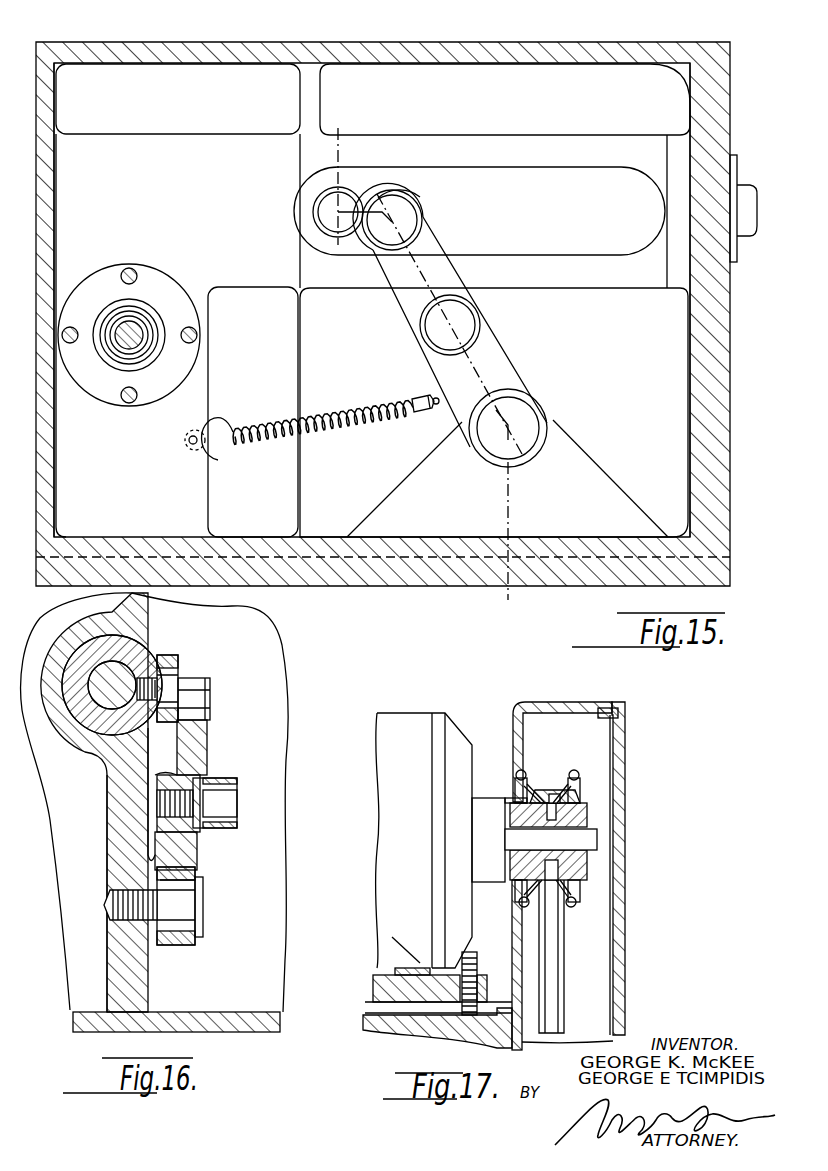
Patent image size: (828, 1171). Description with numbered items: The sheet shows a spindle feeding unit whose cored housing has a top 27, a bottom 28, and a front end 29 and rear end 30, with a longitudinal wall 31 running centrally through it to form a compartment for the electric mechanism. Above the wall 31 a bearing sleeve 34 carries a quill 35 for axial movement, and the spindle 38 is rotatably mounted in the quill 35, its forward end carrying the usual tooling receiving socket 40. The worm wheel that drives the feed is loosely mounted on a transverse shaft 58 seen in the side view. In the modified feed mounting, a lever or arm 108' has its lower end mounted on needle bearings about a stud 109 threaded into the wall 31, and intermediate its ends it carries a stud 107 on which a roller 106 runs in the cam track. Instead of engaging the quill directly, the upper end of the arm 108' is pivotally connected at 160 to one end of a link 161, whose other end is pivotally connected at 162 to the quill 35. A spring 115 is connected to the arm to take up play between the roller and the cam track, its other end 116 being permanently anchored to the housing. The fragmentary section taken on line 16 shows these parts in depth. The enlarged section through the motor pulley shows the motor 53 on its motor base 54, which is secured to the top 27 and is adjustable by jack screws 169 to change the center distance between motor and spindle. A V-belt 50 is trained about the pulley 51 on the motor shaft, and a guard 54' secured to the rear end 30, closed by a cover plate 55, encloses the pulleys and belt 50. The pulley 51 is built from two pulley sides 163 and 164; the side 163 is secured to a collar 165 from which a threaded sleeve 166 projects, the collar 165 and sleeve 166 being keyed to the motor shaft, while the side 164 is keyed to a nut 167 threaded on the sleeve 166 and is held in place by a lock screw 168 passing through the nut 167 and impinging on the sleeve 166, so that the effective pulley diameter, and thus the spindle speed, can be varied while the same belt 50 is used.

In FIG. 15, the section line 16— 16 is at (427, 364).
In FIG. 15, the top 27 is at (505, 55).
In FIG. 17, the top 27 is at (368, 1034).
In FIG. 15, the bottom 28 is at (430, 548).
In FIG. 16, the bottom 28 is at (225, 996).
In FIG. 15, the front end 29 is at (720, 304).
In FIG. 15, the rear end 30 is at (44, 180).
In FIG. 16, the wall 31 is at (110, 798).
In FIG. 15, the bearing sleeve 34 is at (538, 147).
In FIG. 16, the bearing sleeve 34 is at (84, 746).
In FIG. 15, the quill 35 is at (553, 245).
In FIG. 16, the quill 35 is at (147, 648).
In FIG. 16, the spindle 38 is at (162, 664).
In FIG. 15, the tooling receiving socket 40 is at (765, 194).
In FIG. 17, the V-belt 50 is at (560, 956).
In FIG. 17, the pulley 51 is at (594, 846).
In FIG. 17, the motor 53 is at (412, 726).
In FIG. 17, the motor base 54 is at (422, 994).
In FIG. 17, the guard 54' is at (565, 738).
In FIG. 17, the cover plate 55 is at (624, 740).
In FIG. 15, the transverse shaft 58 is at (125, 335).
In FIG. 15, the roller 106 is at (432, 345).
In FIG. 16, the roller 106 is at (238, 783).
In FIG. 16, the stud 107 is at (200, 810).
In FIG. 15, the arm 108' is at (450, 318).
In FIG. 16, the arm 108' is at (205, 795).
In FIG. 15, the stud 109 is at (528, 415).
In FIG. 16, the stud 109 is at (178, 908).
In FIG. 15, the spring 115 is at (358, 408).
In FIG. 15, the spring end 116 is at (203, 455).
In FIG. 15, the pivotal connection 160 is at (405, 214).
In FIG. 16, the pivotal connection 160 is at (196, 713).
In FIG. 15, the link 161 is at (380, 198).
In FIG. 16, the link 161 is at (178, 663).
In FIG. 15, the pivotal connection 162 is at (340, 240).
In FIG. 16, the pivotal connection 162 is at (170, 680).
In FIG. 17, the pulley side 163 is at (550, 766).
In FIG. 17, the pulley side 164 is at (572, 780).
In FIG. 17, the collar 165 is at (520, 872).
In FIG. 17, the threaded sleeve 166 is at (588, 827).
In FIG. 17, the nut 167 is at (572, 806).
In FIG. 17, the lock screw 168 is at (572, 893).
In FIG. 17, the jack screws 169 is at (474, 962).